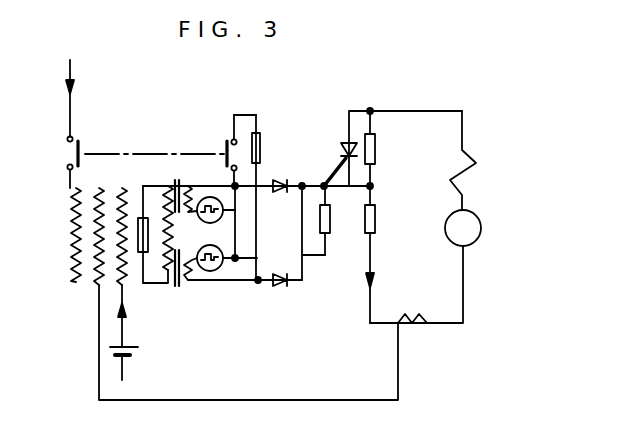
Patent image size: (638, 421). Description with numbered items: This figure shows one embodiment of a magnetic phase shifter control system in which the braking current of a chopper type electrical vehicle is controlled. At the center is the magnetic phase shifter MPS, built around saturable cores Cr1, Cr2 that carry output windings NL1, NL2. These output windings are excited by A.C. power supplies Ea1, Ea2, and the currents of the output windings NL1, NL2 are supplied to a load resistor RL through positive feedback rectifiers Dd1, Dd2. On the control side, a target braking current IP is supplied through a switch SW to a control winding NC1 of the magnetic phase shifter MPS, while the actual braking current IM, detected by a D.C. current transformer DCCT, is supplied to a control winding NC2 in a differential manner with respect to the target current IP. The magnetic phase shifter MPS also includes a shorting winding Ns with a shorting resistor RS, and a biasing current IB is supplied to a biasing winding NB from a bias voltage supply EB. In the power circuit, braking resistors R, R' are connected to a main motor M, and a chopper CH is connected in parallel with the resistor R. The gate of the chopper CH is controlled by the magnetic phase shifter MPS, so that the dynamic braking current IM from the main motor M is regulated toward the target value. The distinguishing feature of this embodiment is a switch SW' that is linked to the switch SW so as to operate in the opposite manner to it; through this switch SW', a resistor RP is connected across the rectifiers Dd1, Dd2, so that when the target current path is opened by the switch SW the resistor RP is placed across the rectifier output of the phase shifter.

The target braking current IP is at (77, 98).
The switch SW is at (48, 158).
The control winding NC1 is at (72, 233).
The control winding NC2 is at (92, 262).
The biasing winding NB is at (116, 264).
The biasing current IB is at (128, 316).
The bias voltage supply EB is at (126, 353).
The shorting resistor RS is at (143, 202).
The shorting winding Ns is at (165, 248).
The saturable core Cr1 is at (178, 185).
The saturable core Cr2 is at (178, 289).
The output winding NL1 is at (193, 186).
The output winding NL2 is at (194, 281).
The A.C. power supply Ea1 is at (237, 214).
The A.C. power supply Ea2 is at (237, 250).
The switch SW' is at (215, 146).
The resistor RP is at (261, 150).
The positive feedback rectifier Dd1 is at (285, 180).
The positive feedback rectifier Dd2 is at (284, 288).
The load resistor RL is at (331, 224).
The chopper CH is at (340, 145).
The braking resistor R is at (381, 148).
The braking resistor R' is at (385, 209).
The braking current IM is at (379, 278).
The main motor M is at (480, 222).
The D.C. current transformer DCCT is at (424, 332).
The magnetic phase shifter MPS is at (258, 358).